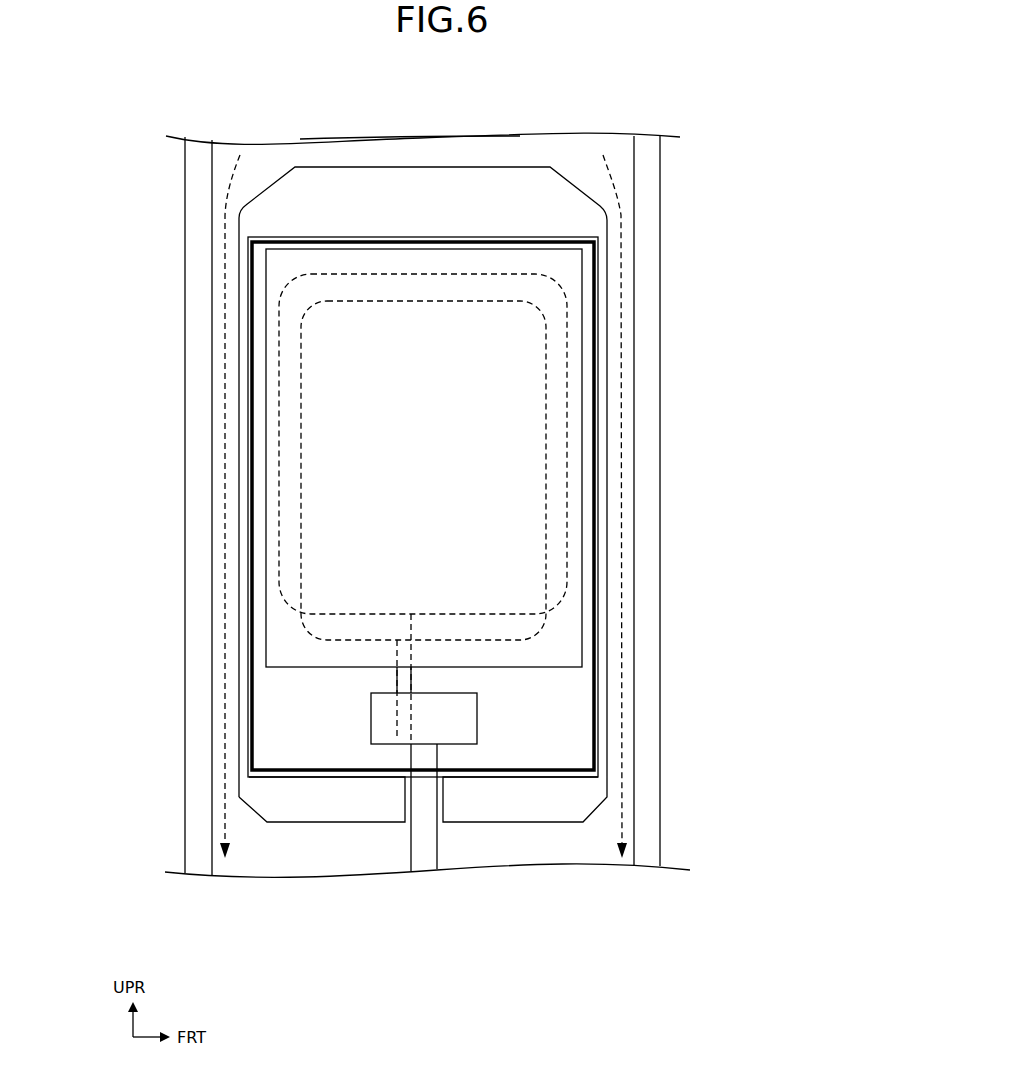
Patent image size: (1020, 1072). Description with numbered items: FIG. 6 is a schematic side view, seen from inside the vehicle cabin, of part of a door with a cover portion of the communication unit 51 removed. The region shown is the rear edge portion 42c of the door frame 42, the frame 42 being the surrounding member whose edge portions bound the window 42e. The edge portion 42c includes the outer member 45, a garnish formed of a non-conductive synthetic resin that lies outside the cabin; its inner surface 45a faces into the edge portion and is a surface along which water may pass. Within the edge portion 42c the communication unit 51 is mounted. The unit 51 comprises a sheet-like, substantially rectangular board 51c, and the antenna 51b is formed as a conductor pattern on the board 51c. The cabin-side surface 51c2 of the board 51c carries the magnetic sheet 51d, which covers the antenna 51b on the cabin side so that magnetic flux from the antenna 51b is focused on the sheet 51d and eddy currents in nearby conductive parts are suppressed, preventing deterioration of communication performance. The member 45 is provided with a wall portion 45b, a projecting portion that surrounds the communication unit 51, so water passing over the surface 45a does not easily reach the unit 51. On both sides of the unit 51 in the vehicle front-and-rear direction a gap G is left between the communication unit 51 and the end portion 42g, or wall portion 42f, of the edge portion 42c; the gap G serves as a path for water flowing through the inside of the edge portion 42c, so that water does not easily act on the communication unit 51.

The outer member 45 is at (474, 505).
The rear edge portion 42c is at (474, 505).
The frame 42 is at (705, 247).
The inner surface 45a is at (492, 143).
The wall portion 45b is at (245, 470).
The wall portion 42f is at (198, 713).
The end portion 42g is at (450, 504).
The window 42e is at (187, 786).
The gap G is at (220, 581).
The communication unit 51 is at (549, 238).
The magnetic sheet 51d is at (266, 332).
The antenna 51b is at (567, 410).
The surface 51c2 is at (577, 742).
The board 51c is at (578, 698).